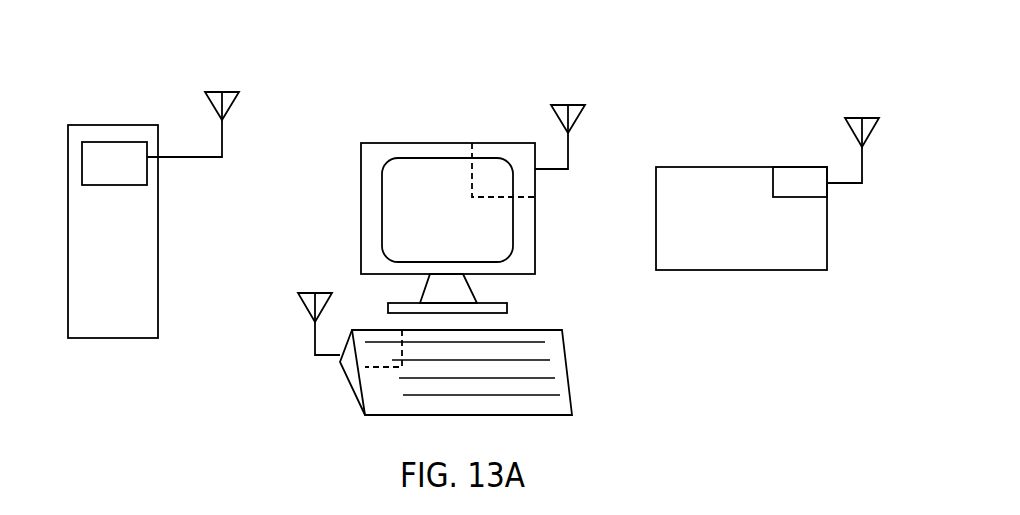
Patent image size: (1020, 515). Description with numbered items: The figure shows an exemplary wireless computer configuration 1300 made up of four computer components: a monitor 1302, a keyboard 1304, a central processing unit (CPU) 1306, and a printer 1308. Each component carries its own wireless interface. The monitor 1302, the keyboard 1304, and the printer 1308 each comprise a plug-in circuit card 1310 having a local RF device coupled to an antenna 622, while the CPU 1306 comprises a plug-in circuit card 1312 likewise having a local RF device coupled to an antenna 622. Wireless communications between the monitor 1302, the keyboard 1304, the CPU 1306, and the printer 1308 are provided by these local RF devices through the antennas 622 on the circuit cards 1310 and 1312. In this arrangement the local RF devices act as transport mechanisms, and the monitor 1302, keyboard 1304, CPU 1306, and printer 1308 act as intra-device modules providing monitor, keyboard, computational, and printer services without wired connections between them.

The wireless computer configuration 1300 is at (768, 52).
The monitor 1302 is at (512, 275).
The keyboard 1304 is at (515, 416).
The central processing unit (CPU) 1306 is at (132, 186).
The printer 1308 is at (737, 271).
The plug-in circuit card 1310 is at (512, 143).
The plug-in circuit card 1312 is at (137, 124).
The antenna 622 is at (232, 90).